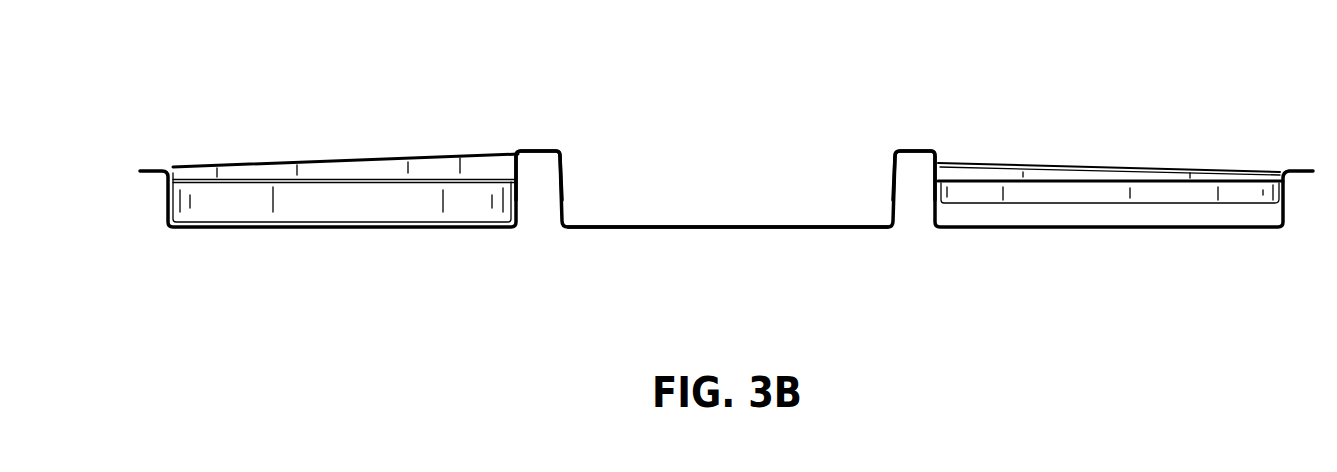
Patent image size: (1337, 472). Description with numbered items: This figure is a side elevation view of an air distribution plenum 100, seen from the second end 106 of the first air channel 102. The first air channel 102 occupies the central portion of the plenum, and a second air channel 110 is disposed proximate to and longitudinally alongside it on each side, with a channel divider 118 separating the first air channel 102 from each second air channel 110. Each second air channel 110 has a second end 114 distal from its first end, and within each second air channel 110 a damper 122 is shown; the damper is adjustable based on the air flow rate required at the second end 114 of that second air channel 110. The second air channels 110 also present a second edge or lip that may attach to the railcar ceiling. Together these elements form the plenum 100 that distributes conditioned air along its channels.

The air distribution plenum 100 is at (726, 183).
The first air channel 102 is at (777, 229).
The second end of the first air channel 106 is at (690, 247).
The second air channel 110 is at (343, 229).
The second end of the second air channel 114 is at (407, 247).
The channel divider 118 is at (535, 147).
The damper 122 is at (257, 197).